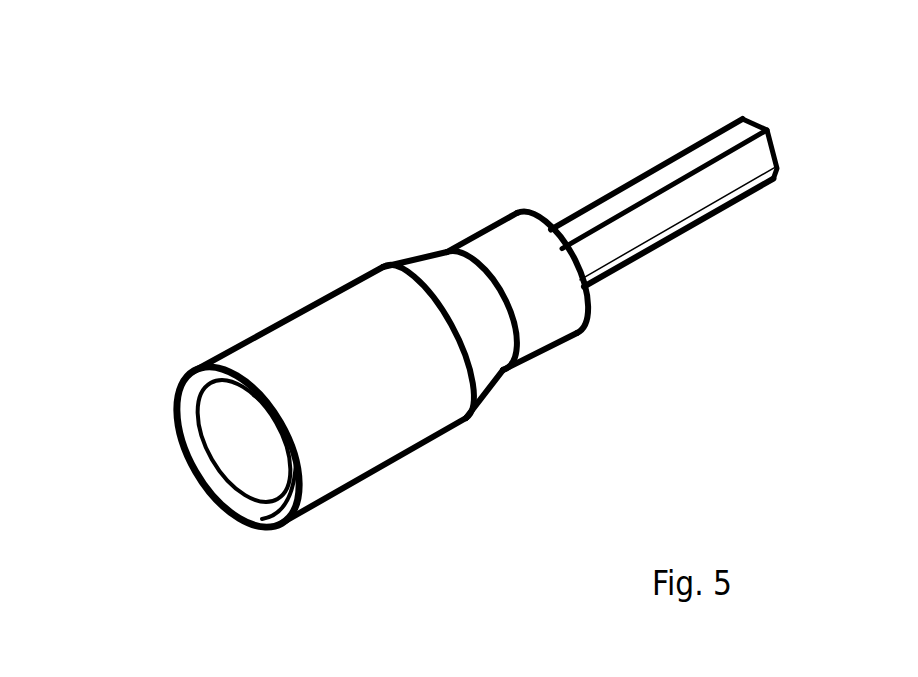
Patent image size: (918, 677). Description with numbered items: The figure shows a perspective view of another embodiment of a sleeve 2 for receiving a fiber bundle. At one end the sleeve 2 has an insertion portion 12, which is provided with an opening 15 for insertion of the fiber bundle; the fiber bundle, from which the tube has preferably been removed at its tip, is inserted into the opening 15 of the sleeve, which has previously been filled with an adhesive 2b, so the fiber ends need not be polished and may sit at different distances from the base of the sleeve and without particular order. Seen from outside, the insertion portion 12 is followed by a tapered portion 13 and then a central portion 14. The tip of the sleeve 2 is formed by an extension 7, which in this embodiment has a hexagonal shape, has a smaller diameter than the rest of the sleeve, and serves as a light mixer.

The sleeve 2 is at (649, 439).
The adhesive 2b is at (238, 442).
The extension 7 is at (645, 167).
The insertion portion 12 is at (267, 322).
The tapered portion 13 is at (423, 253).
The central portion 14 is at (495, 222).
The opening 15 is at (242, 495).